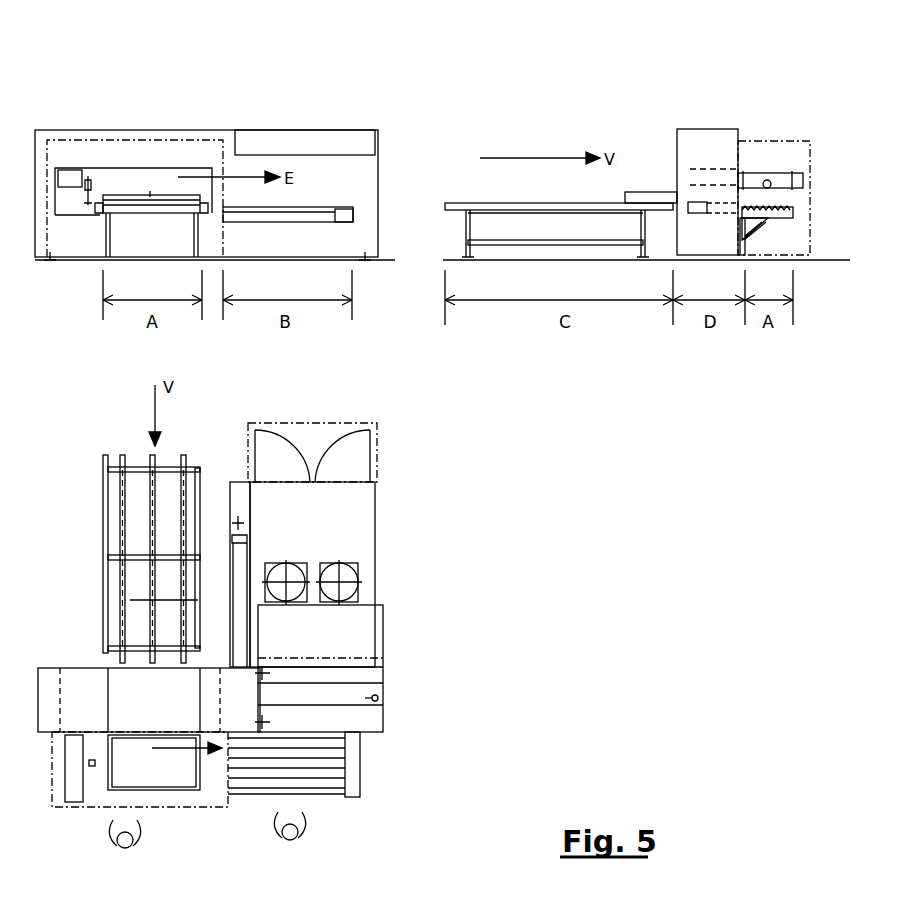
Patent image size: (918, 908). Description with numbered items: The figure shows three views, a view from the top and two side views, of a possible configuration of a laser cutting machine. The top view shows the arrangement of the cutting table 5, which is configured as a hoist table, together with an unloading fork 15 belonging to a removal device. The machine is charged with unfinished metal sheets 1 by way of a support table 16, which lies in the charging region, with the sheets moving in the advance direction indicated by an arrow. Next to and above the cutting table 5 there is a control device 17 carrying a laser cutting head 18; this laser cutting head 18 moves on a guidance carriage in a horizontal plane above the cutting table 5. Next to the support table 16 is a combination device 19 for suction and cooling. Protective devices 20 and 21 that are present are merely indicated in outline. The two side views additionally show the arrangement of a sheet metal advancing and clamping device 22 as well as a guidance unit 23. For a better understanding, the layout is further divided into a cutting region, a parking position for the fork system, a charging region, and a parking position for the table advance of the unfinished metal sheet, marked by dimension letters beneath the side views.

The unfinished metal sheet 1 is at (117, 605).
The cutting table 5 is at (795, 215).
The unloading fork 15 is at (312, 207).
The support table 16 is at (480, 208).
The control device 17 is at (701, 166).
The laser cutting head 18 is at (767, 180).
The combination device 19 is at (358, 576).
The protective device 20 is at (796, 141).
The protective device 21 is at (633, 200).
The sheet metal advancing and clamping device 22 is at (211, 212).
The guidance unit 23 is at (65, 170).